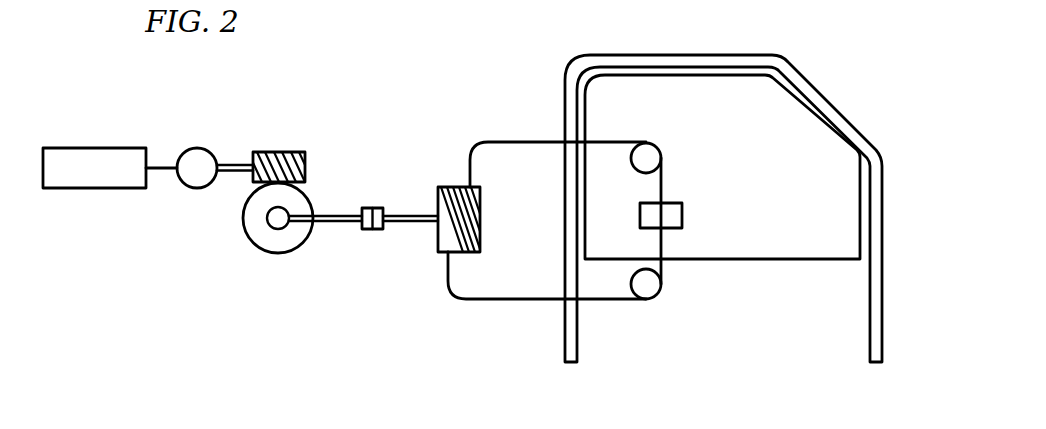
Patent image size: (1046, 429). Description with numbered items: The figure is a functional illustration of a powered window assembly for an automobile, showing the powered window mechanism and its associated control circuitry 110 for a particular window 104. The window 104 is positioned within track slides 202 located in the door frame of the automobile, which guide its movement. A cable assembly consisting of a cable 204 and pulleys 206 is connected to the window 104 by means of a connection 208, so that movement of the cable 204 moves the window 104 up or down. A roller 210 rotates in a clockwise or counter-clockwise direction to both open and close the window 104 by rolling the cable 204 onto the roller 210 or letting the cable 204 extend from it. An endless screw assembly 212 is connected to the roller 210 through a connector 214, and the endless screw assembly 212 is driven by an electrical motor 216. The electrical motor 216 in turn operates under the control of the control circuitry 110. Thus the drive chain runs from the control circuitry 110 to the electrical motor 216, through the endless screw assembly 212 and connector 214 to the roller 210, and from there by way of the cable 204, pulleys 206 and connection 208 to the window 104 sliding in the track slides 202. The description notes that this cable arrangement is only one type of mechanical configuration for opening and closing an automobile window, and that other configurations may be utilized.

The control circuitry 110 is at (94, 148).
The electrical motor 216 is at (196, 189).
The endless screw assembly 212 is at (283, 152).
The connector 214 is at (366, 230).
The roller 210 is at (438, 196).
The cable 204 is at (513, 300).
The pulleys 206 is at (667, 313).
The connection 208 is at (683, 216).
The window 104 is at (800, 128).
The track slides 202 is at (565, 102).